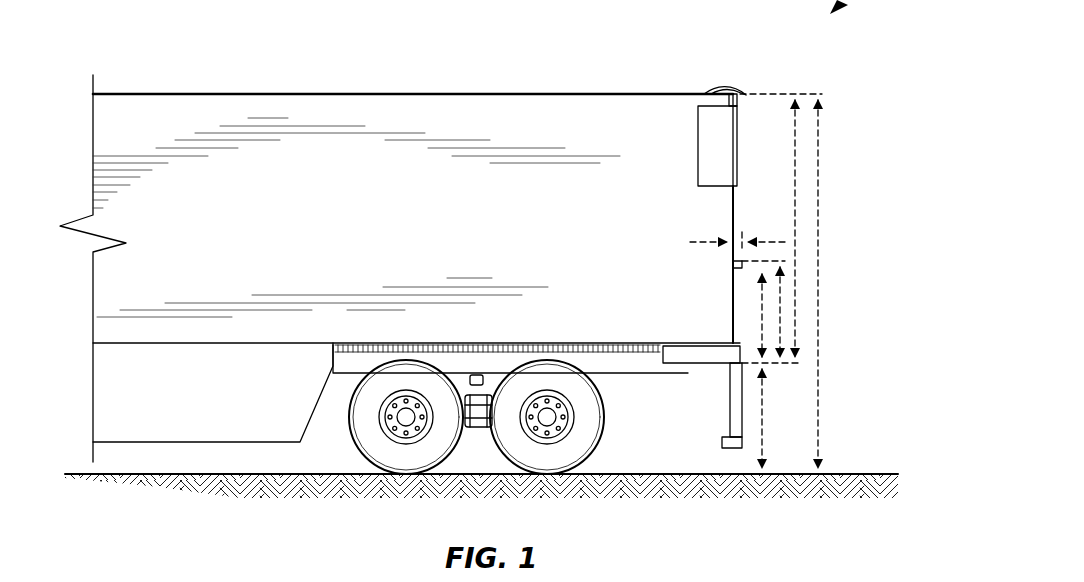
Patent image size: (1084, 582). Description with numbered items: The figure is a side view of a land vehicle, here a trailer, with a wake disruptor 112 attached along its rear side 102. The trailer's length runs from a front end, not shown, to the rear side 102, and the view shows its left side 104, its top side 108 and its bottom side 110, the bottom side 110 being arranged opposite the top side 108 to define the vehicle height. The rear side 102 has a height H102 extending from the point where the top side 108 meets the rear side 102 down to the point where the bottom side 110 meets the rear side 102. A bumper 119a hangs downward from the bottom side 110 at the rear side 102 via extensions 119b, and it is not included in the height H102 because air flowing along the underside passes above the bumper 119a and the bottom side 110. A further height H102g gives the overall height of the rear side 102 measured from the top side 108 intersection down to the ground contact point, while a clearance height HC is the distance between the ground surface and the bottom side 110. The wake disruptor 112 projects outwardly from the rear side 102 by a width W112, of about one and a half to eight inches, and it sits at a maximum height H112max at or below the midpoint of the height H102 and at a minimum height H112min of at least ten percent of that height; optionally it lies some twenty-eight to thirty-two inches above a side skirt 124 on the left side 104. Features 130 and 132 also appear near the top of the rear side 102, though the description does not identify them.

The rear side 102 is at (735, 210).
The left side 104 is at (372, 219).
The top side 108 is at (383, 93).
The bottom side 110 is at (700, 365).
The wake disruptor 112 is at (735, 265).
The side skirt 124 is at (153, 432).
The roof cap 130 is at (728, 85).
The rear door housing 132 is at (698, 141).
The bumper 119a is at (728, 448).
The extensions 119b is at (742, 422).
The rear side height H102 is at (795, 150).
The overall rear side height relative ground H102g is at (818, 205).
The maximum height of wake disruptor H112max is at (780, 297).
The minimum height of wake disruptor H112min is at (762, 340).
The clearance height HC is at (762, 412).
The width of wake disruptor W112 is at (707, 240).